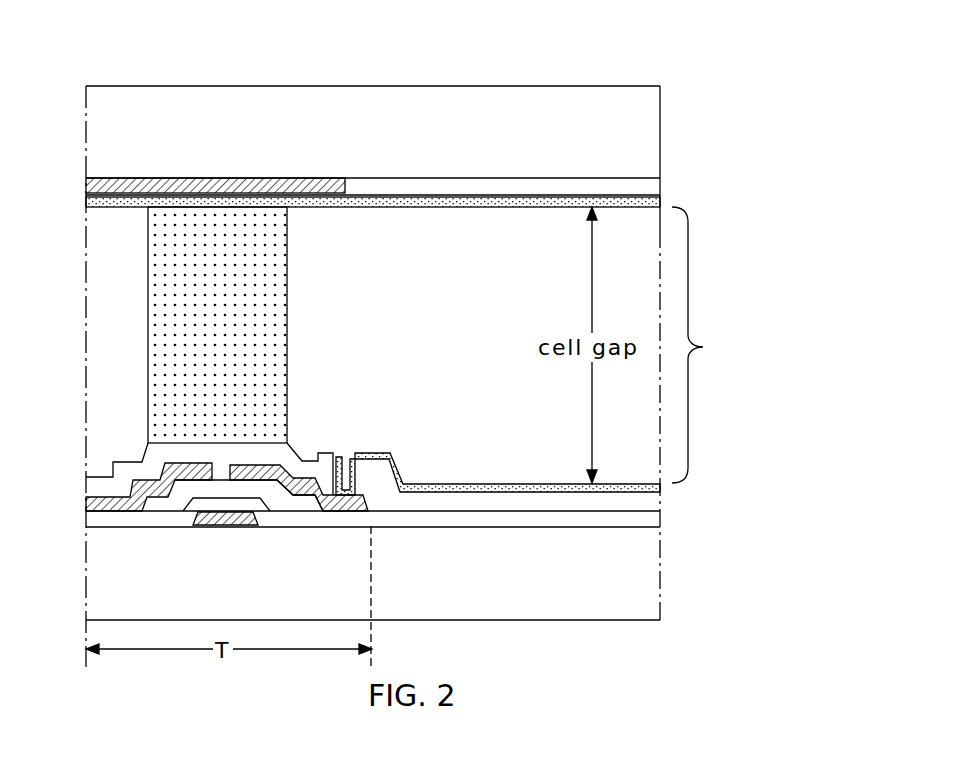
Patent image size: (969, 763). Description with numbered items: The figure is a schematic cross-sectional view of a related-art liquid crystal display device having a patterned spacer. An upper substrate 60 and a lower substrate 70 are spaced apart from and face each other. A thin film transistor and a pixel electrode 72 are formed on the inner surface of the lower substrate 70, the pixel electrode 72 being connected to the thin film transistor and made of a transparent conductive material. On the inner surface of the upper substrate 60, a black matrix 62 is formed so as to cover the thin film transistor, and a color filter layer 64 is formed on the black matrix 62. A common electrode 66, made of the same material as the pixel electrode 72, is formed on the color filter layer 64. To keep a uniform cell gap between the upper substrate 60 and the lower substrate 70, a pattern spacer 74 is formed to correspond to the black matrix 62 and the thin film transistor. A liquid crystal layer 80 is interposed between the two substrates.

The upper substrate 60 is at (410, 147).
The black matrix 62 is at (163, 183).
The color filter layer 64 is at (548, 190).
The common electrode 66 is at (425, 207).
The lower substrate 70 is at (440, 586).
The pixel electrode 72 is at (432, 483).
The pattern spacer 74 is at (287, 298).
The liquid crystal layer 80 is at (417, 345).